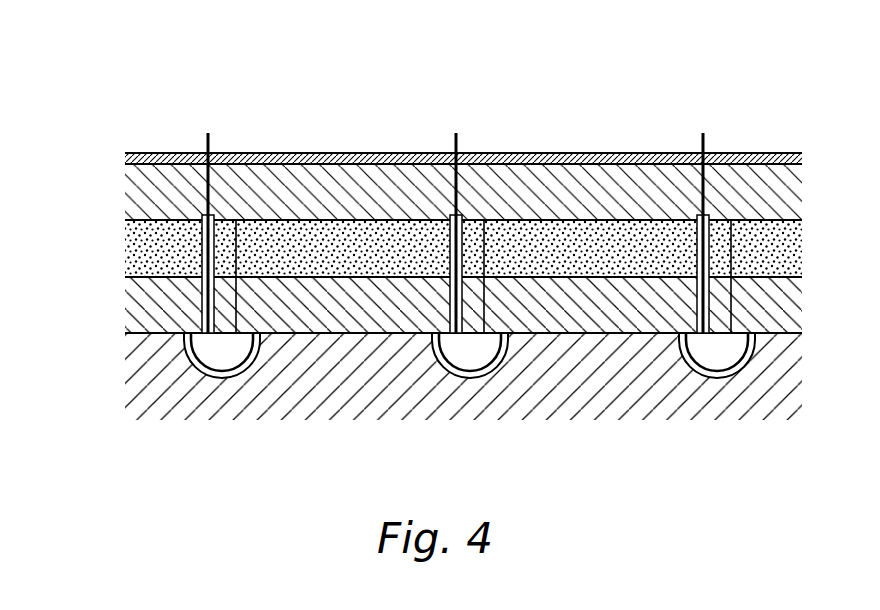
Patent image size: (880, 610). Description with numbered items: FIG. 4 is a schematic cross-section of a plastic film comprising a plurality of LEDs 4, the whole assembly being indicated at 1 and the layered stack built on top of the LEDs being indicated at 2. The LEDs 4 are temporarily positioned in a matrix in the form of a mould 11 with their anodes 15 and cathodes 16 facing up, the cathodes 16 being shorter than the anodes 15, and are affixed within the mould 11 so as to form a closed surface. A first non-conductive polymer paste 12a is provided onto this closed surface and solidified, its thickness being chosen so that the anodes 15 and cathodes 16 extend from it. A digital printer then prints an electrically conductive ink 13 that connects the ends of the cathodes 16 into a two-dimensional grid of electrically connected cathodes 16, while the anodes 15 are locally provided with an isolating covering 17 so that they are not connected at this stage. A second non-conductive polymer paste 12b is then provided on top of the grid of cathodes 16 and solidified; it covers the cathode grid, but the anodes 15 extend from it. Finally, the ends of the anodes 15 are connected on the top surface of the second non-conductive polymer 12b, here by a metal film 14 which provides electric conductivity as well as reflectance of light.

The semiconductor device 1 is at (420, 248).
The layer stack / wiring structure 2 is at (404, 236).
The LEDs 4 is at (471, 355).
The mould 11 is at (145, 374).
The first non-conductive polymer paste 12a is at (424, 305).
The second non-conductive polymer paste 12b is at (125, 190).
The electrically conductive ink 13 is at (125, 246).
The metal film 14 is at (125, 157).
The anodes 15 is at (455, 183).
The cathodes 16 is at (485, 250).
The isolating covering 17 is at (448, 252).